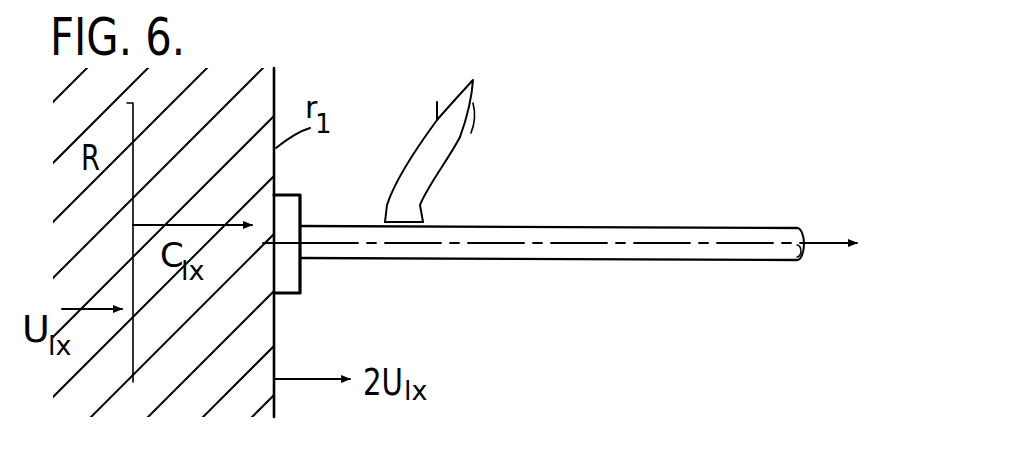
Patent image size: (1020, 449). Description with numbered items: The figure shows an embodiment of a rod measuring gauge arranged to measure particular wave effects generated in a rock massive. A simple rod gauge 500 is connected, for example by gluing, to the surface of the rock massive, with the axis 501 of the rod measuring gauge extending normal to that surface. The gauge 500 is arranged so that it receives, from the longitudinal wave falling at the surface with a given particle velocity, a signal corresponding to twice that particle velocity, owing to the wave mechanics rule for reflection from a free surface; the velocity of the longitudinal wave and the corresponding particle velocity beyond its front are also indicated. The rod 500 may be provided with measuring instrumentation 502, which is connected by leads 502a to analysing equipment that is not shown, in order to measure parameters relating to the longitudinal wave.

The rod gauge 500 is at (570, 262).
The axis 501 is at (669, 245).
The measuring instrumentation 502 is at (407, 212).
The leads 502a is at (473, 80).